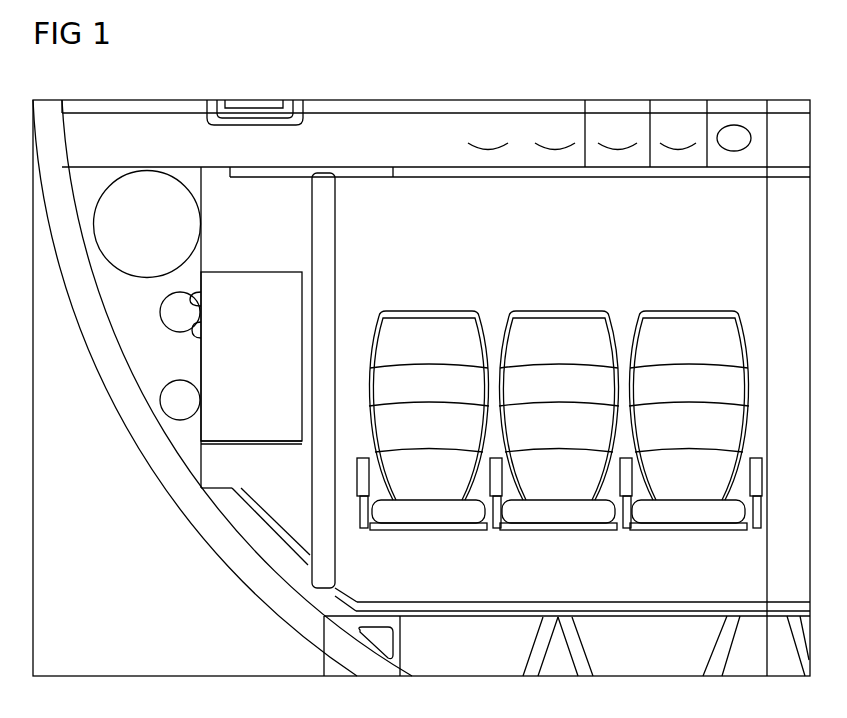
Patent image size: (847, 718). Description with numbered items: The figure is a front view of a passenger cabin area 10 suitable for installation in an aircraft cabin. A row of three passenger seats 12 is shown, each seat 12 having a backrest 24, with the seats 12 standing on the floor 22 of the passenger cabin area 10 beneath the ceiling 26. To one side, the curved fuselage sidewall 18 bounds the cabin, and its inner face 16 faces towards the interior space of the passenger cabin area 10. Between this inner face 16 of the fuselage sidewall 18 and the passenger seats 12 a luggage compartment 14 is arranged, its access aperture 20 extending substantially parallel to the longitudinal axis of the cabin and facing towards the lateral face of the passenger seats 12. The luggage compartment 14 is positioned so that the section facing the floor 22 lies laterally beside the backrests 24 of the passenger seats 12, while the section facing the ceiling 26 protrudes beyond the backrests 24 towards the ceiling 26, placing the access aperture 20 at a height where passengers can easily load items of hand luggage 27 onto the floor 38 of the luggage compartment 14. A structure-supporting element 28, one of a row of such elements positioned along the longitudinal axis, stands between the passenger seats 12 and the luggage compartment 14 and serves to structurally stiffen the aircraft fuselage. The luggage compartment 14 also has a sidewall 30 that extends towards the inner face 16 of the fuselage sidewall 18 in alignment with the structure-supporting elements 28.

The passenger cabin area 10 is at (762, 90).
The passenger seat 12 is at (430, 515).
The luggage compartment 14 is at (214, 470).
The inner face 16 is at (125, 350).
The fuselage sidewall 18 is at (133, 420).
The access aperture 20 is at (304, 298).
The floor 22 is at (627, 612).
The backrest 24 is at (431, 325).
The ceiling 26 is at (598, 166).
The item of hand luggage 27 is at (255, 430).
The structure-supporting element 28 is at (336, 556).
The sidewall 30 is at (200, 280).
The floor of the luggage compartment 38 is at (293, 446).